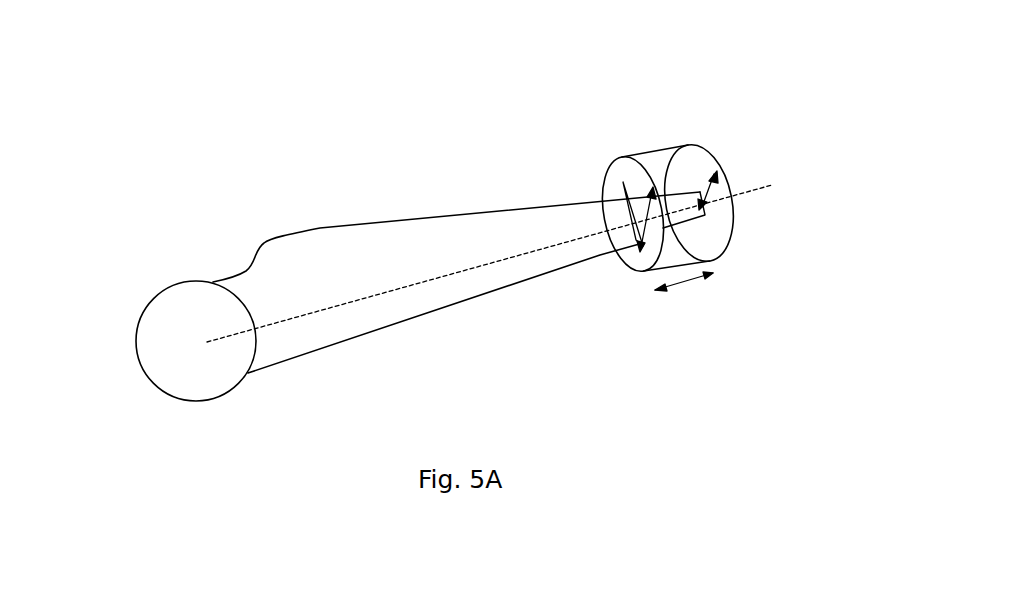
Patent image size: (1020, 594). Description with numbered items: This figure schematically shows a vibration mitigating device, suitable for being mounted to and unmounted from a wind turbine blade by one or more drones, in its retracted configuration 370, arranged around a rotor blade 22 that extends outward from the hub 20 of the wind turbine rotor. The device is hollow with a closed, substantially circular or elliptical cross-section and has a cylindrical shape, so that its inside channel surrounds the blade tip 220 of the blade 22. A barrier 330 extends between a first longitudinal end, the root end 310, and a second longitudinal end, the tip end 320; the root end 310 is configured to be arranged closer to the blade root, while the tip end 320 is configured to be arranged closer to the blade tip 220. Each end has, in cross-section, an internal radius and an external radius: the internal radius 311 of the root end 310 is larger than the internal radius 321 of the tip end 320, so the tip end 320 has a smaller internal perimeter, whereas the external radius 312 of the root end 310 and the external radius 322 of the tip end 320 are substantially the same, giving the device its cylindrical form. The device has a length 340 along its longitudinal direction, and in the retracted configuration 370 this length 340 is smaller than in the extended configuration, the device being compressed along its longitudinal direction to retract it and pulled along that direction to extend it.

The hub 20 is at (173, 332).
The rotor blade 22 is at (410, 307).
The blade tip 220 is at (730, 193).
The root end 310 is at (640, 263).
The internal radius of the root end 311 is at (620, 193).
The external radius of the root end 312 is at (651, 180).
The tip end 320 is at (712, 240).
The internal radius of the tip end 321 is at (710, 206).
The external radius of the tip end 322 is at (720, 177).
The barrier 330 is at (655, 165).
The length 340 is at (687, 284).
The retracted configuration 370 is at (722, 107).